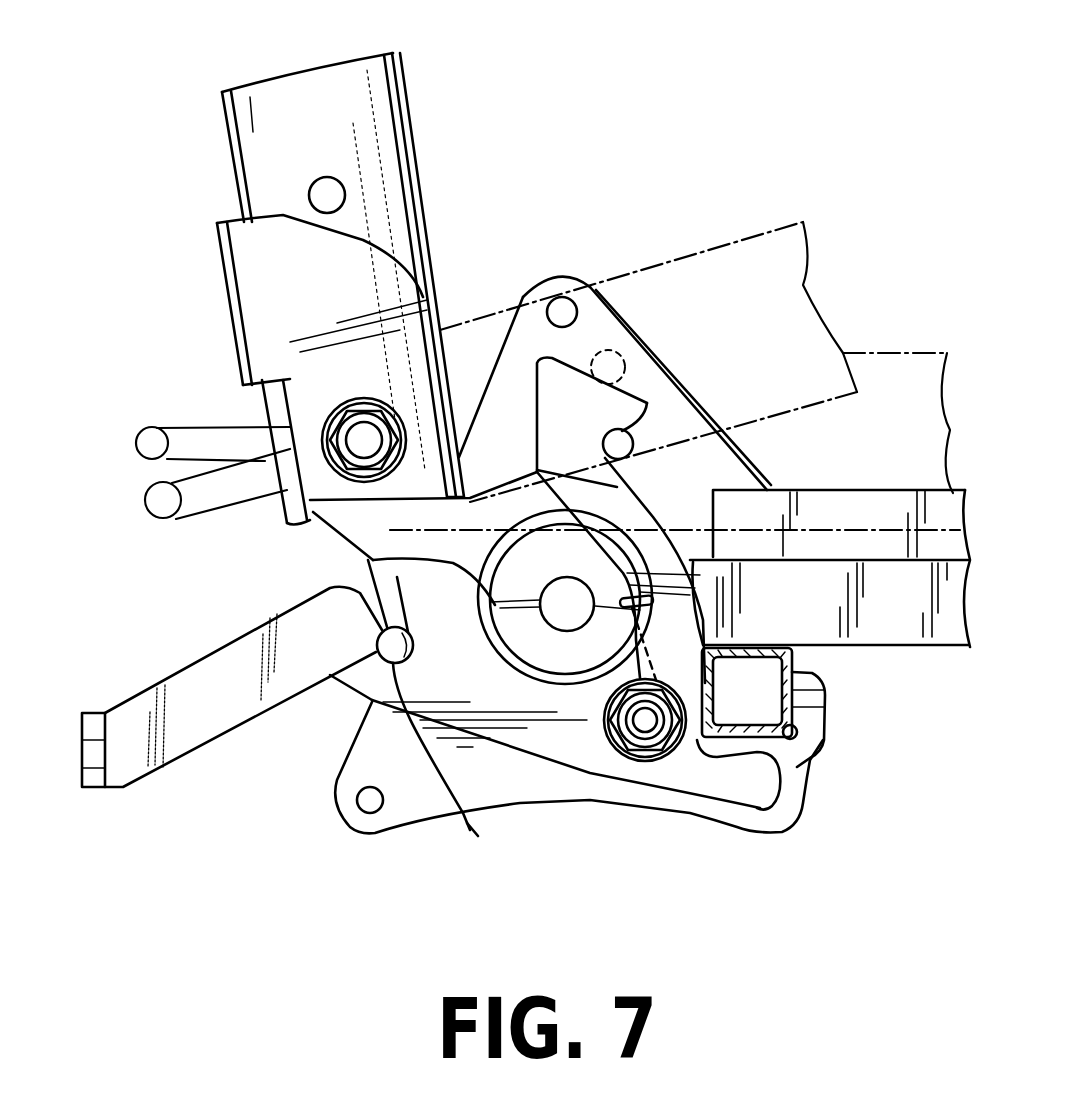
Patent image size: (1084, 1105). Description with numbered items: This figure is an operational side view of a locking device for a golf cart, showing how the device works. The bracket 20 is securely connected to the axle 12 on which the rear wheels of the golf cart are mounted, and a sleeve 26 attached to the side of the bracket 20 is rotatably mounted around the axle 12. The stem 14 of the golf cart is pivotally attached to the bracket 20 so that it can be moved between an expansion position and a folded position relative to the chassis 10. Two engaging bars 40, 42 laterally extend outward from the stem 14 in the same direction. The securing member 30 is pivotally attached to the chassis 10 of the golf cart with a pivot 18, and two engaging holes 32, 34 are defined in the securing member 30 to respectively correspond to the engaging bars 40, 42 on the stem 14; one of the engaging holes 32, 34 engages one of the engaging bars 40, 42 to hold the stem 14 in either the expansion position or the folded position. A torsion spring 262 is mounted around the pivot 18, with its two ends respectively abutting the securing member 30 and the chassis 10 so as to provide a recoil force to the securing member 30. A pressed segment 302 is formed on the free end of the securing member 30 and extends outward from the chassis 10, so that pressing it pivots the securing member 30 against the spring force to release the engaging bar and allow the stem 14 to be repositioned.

The chassis 10 is at (905, 633).
The axle 12 is at (572, 598).
The stem 14 is at (386, 122).
The pivot 18 is at (645, 727).
The bracket 20 is at (232, 320).
The sleeve 26 is at (370, 563).
The securing member 30 is at (547, 808).
The engaging hole 32 is at (482, 849).
The engaging hole 34 is at (622, 430).
The engaging bar 40 is at (325, 674).
The engaging bar 42 is at (328, 195).
The torsion spring 262 is at (652, 650).
The pressed segment 302 is at (128, 710).